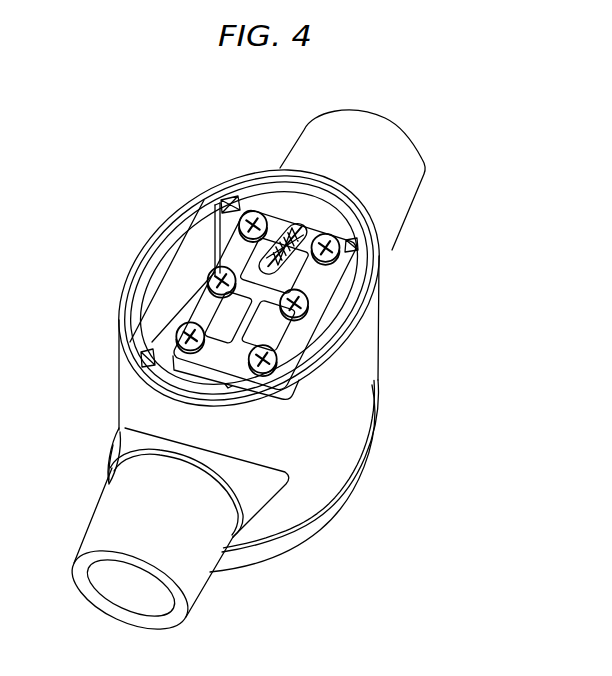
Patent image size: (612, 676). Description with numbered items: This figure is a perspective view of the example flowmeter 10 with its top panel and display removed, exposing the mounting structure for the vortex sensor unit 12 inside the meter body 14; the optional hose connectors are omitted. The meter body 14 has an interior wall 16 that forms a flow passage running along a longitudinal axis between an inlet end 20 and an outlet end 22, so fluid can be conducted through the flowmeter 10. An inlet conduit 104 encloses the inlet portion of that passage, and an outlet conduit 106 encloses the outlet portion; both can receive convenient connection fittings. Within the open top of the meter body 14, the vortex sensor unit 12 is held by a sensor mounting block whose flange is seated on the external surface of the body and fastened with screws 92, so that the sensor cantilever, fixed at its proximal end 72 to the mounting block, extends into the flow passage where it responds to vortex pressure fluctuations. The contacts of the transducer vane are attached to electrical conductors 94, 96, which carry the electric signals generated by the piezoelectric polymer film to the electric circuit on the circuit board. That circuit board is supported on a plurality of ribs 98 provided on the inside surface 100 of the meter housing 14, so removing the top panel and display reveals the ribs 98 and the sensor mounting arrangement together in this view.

The flowmeter 10 is at (87, 203).
The vortex sensor unit 12 is at (288, 246).
The meter body 14 is at (390, 323).
The interior wall 16 is at (103, 572).
The inlet end 20 is at (117, 608).
The outlet end 22 is at (424, 152).
The proximal end 72 is at (187, 363).
The screws 92 is at (200, 292).
The electrical conductor 94 is at (258, 222).
The electrical conductor 96 is at (285, 223).
The ribs 98 is at (223, 200).
The inside surface 100 is at (187, 247).
The inlet conduit 104 is at (93, 521).
The outlet conduit 106 is at (283, 222).